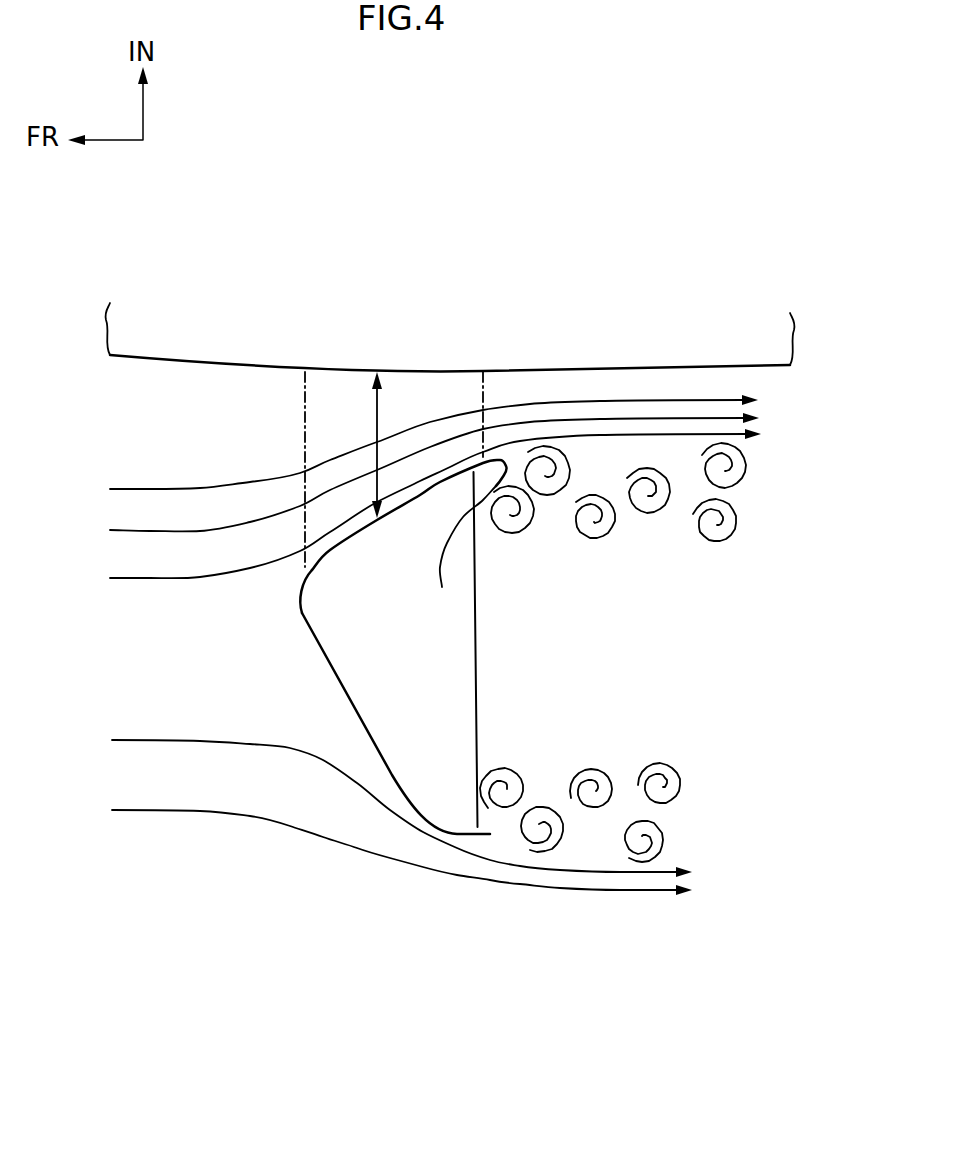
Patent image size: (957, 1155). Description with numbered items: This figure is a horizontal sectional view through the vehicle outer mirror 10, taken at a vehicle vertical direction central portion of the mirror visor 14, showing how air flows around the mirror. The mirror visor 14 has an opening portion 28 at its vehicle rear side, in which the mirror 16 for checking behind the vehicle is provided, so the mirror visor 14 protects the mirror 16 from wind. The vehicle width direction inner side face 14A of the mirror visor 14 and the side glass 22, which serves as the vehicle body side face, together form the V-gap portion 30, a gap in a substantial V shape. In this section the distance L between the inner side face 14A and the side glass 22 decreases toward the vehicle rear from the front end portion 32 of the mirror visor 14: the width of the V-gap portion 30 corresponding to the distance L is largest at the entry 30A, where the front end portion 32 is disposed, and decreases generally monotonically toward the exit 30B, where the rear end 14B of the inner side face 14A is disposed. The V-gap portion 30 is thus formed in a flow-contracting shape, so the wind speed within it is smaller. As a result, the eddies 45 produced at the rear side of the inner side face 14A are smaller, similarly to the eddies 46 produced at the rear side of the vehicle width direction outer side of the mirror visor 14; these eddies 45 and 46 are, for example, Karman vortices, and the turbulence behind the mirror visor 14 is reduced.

The vehicle outer mirror 10 is at (304, 868).
The mirror visor 14 is at (349, 647).
The vehicle width direction inner side face 14A is at (395, 512).
The rear end 14B is at (455, 553).
The mirror 16 is at (478, 615).
The side glass 22 is at (162, 362).
The opening portion 28 is at (493, 697).
The V-gap portion 30 is at (340, 428).
The entry 30A is at (303, 388).
The exit 30B is at (483, 397).
The front end portion 32 is at (301, 597).
The eddies 45 is at (563, 498).
The eddies 46 is at (560, 807).
The distance L is at (380, 432).